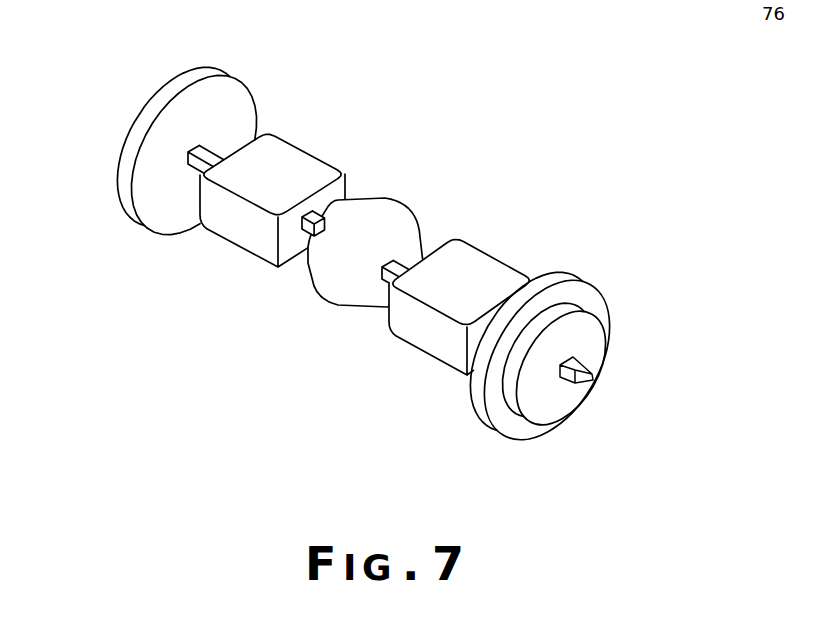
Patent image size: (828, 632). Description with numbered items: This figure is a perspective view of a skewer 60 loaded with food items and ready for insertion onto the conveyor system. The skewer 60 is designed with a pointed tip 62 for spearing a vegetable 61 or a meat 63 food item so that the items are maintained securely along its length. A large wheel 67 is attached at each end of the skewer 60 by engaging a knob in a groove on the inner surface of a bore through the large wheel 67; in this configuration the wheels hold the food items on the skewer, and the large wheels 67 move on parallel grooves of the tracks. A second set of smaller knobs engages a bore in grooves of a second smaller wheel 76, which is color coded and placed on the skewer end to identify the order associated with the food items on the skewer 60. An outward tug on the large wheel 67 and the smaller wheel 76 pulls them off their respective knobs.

The skewer 60 is at (309, 156).
The vegetable 61 is at (387, 212).
The pointed tip 62 is at (588, 385).
The meat 63 is at (283, 150).
The large wheel 67 is at (240, 107).
The second smaller wheel 76 is at (153, 90).